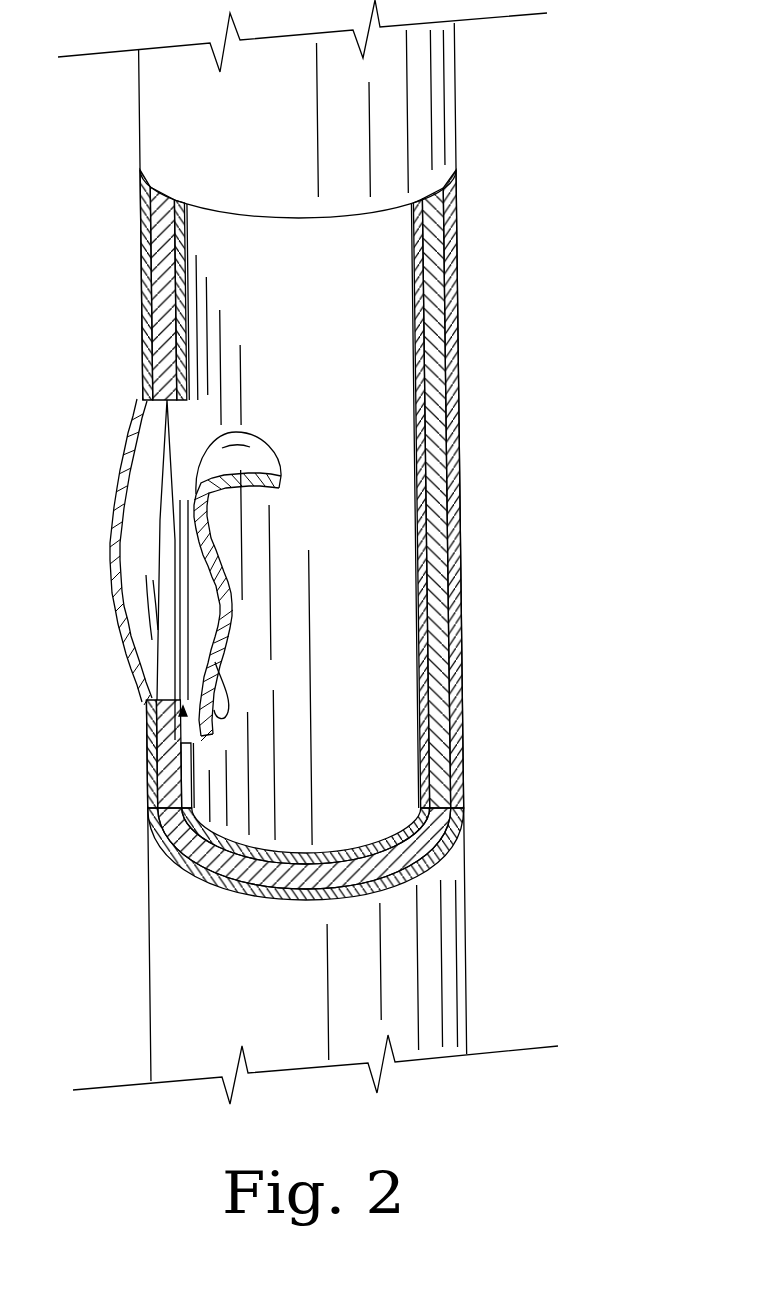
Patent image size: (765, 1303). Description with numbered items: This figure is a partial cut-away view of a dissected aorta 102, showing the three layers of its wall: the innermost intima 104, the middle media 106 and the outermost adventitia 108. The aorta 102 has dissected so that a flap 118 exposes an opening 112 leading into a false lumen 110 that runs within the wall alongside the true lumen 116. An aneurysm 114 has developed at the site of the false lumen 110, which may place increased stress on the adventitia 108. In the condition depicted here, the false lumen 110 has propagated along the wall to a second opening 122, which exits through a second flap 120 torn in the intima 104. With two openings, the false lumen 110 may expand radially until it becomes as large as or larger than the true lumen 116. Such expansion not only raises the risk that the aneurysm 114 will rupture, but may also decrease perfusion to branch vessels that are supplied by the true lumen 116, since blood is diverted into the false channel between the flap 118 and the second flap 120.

The aorta 102 is at (225, 120).
The intima 104 is at (412, 243).
The media 106 is at (157, 245).
The adventitia 108 is at (142, 284).
The false lumen 110 is at (145, 553).
The opening 112 is at (200, 452).
The aneurysm 114 is at (100, 478).
The true lumen 116 is at (330, 808).
The flap 118 is at (270, 462).
The second flap 120 is at (222, 722).
The second opening 122 is at (188, 744).